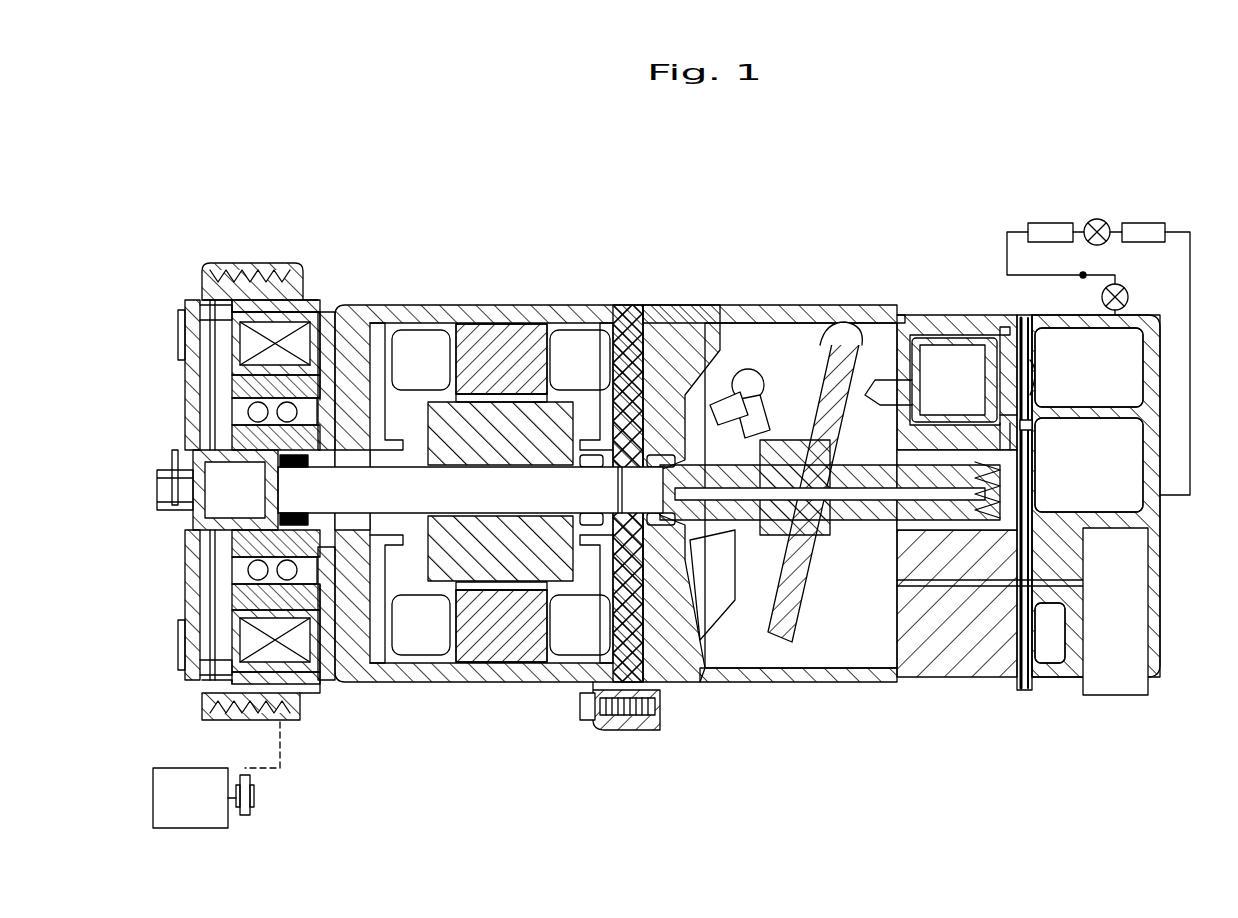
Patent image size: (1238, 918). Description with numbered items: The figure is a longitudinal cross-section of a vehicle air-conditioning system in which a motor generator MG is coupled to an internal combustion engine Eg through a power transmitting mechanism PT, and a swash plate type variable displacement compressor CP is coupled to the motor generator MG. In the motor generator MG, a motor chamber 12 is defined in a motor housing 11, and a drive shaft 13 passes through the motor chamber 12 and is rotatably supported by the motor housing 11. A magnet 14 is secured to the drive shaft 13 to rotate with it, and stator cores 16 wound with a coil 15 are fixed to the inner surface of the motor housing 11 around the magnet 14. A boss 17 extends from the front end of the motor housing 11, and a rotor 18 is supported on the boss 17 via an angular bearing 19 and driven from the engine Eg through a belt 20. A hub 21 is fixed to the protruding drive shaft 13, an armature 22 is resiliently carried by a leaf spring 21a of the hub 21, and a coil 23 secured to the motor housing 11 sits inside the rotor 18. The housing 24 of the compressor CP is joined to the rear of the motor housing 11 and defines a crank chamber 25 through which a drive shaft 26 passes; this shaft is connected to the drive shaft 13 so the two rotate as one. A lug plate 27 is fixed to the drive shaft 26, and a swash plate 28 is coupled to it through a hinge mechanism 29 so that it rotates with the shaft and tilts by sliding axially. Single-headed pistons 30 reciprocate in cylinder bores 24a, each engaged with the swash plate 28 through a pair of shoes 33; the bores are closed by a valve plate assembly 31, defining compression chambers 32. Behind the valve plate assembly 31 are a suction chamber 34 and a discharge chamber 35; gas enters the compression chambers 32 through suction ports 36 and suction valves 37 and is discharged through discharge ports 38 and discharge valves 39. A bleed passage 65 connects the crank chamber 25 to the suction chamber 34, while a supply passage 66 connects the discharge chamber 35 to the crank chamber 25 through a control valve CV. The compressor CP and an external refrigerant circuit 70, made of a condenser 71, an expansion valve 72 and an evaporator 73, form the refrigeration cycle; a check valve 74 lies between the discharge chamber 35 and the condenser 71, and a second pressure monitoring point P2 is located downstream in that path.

The motor housing 11 is at (400, 682).
The motor chamber 12 is at (602, 583).
The drive shaft 13 is at (420, 527).
The magnet 14 is at (560, 420).
The coil 15 is at (590, 330).
The stator cores 16 is at (500, 323).
The boss 17 is at (290, 450).
The rotor 18 is at (303, 278).
The angular bearing 19 is at (262, 412).
The belt 20 is at (240, 722).
The hub 21 is at (190, 538).
The leaf spring 21a is at (185, 625).
The armature 22 is at (232, 592).
The coil 23 is at (285, 690).
The housing 24 is at (950, 677).
The cylinder bores 24a is at (960, 332).
The crank chamber 25 is at (884, 645).
The drive shaft 26 is at (812, 520).
The lug plate 27 is at (700, 633).
The swash plate 28 is at (775, 635).
The hinge mechanism 29 is at (752, 363).
The single-headed pistons 30 is at (905, 320).
The valve plate assembly 31 is at (1025, 690).
The compression chambers 32 is at (1005, 327).
The shoes 33 is at (840, 318).
The suction chamber 34 is at (1127, 477).
The discharge chamber 35 is at (1125, 398).
The suction ports 36 is at (1032, 425).
The suction valves 37 is at (1017, 415).
The discharge ports 38 is at (1018, 370).
The discharge valves 39 is at (1032, 362).
The bleed passage 65 is at (1000, 490).
The supply passage 66 is at (897, 583).
The external refrigerant circuit 70 is at (989, 237).
The condenser 71 is at (1035, 223).
The expansion valve 72 is at (1092, 219).
The evaporator 73 is at (1130, 223).
The check valve 74 is at (1128, 295).
The power transmitting mechanism PT is at (195, 264).
The internal combustion engine Eg is at (165, 768).
The motor generator MG is at (520, 682).
The swash plate type variable displacement compressor CP is at (718, 682).
The second pressure monitoring point P2 is at (1086, 273).
The control valve CV is at (1133, 645).